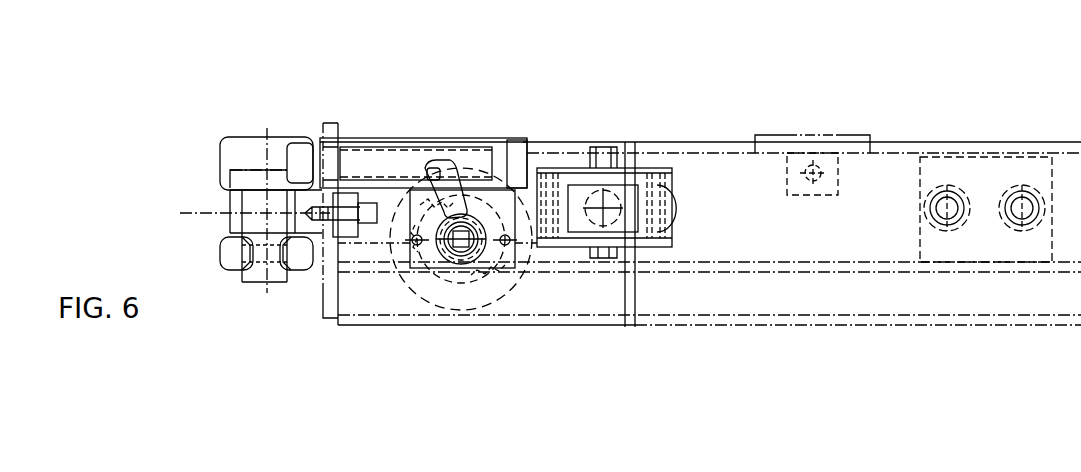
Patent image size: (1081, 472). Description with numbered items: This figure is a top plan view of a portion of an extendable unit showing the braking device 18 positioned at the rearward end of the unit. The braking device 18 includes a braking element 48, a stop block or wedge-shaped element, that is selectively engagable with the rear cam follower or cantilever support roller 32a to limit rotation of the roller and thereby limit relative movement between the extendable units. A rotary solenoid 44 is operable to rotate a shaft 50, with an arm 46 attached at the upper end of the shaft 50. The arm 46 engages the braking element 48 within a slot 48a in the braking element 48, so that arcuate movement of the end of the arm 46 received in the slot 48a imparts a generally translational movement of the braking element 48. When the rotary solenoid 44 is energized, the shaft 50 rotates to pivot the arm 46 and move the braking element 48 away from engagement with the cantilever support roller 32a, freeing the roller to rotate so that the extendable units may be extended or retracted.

The braking device 18 is at (425, 318).
The rear cam follower or cantilever support roller 32a is at (235, 152).
The rotary solenoid 44 is at (550, 317).
The arm 46 is at (420, 180).
The braking element 48 is at (363, 160).
The slot 48a is at (428, 177).
The shaft 50 is at (462, 243).